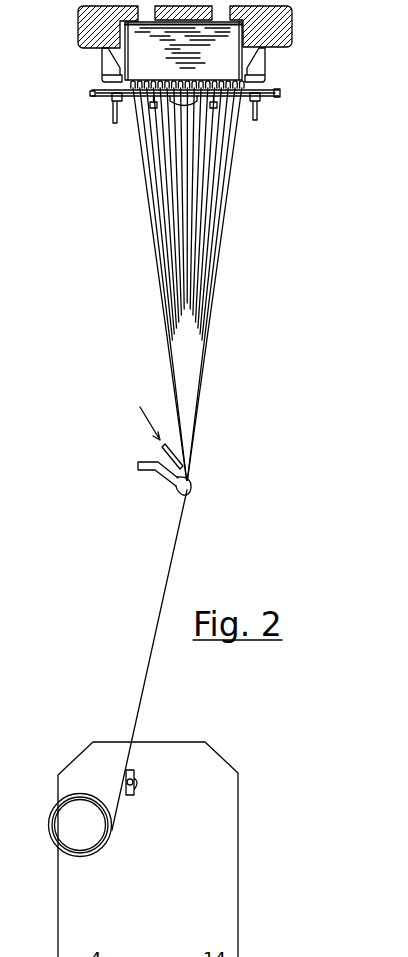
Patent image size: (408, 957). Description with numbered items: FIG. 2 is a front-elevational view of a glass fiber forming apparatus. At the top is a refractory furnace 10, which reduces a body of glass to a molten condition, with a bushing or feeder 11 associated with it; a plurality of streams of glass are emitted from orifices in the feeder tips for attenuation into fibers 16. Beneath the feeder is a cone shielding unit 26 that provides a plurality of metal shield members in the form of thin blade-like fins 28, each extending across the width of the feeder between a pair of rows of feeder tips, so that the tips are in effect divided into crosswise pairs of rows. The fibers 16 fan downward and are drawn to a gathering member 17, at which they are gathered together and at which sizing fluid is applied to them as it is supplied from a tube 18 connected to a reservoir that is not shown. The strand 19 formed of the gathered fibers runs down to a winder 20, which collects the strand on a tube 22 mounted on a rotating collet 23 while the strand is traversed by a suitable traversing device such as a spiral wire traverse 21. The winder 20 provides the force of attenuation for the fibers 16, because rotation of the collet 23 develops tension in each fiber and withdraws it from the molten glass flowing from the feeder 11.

The refractory furnace 10 is at (292, 13).
The bushing or feeder 11 is at (257, 97).
The fibers 16 is at (160, 290).
The gathering member 17 is at (170, 480).
The tube 18 is at (162, 450).
The strand 19 is at (172, 563).
The winder 20 is at (226, 754).
The spiral wire traverse 21 is at (133, 770).
The tube 22 is at (52, 838).
The rotating collet 23 is at (62, 815).
The cone shielding unit 26 is at (90, 93).
The blade-like fins 28 is at (118, 99).